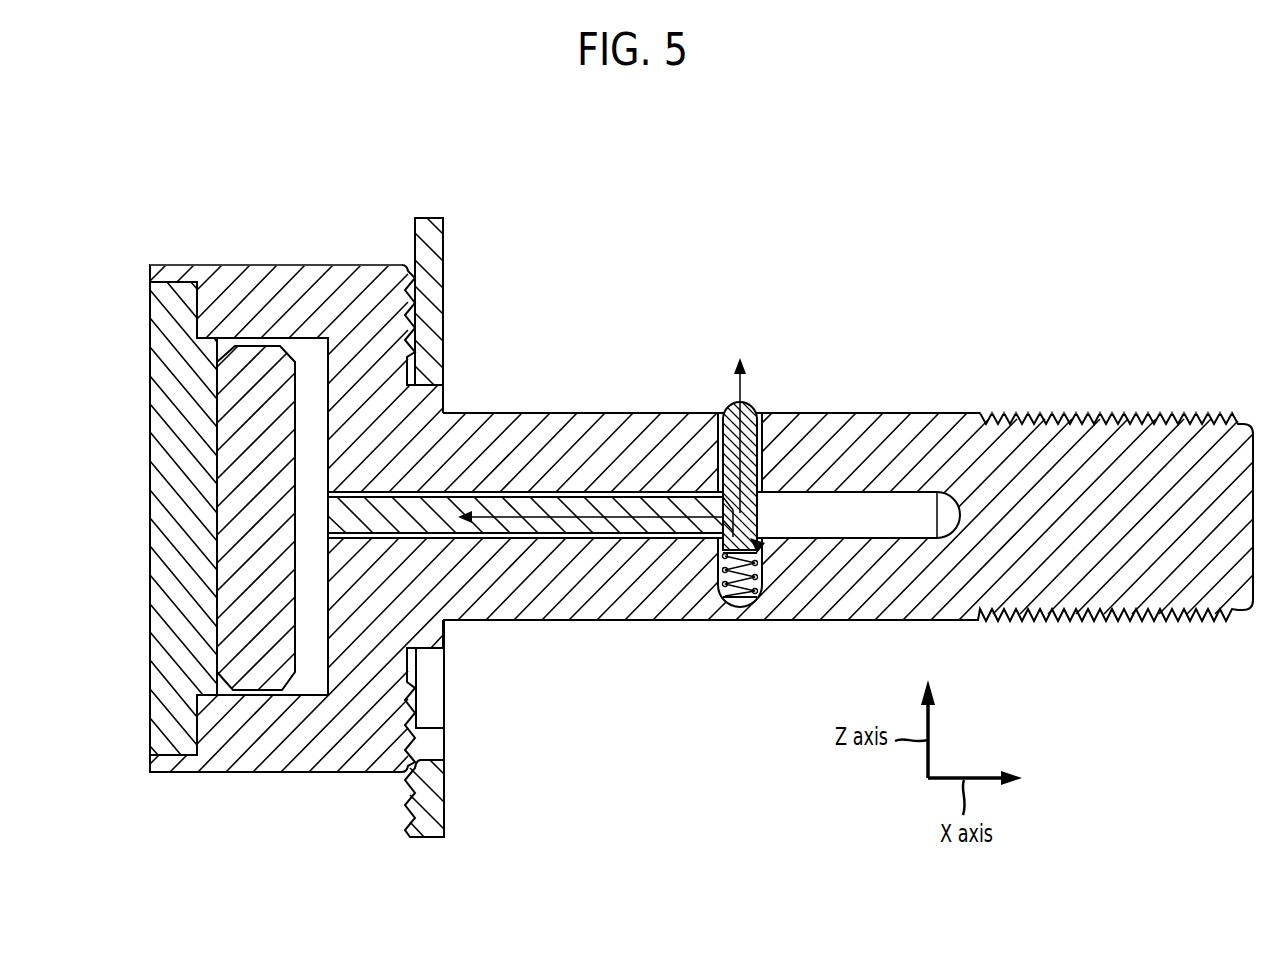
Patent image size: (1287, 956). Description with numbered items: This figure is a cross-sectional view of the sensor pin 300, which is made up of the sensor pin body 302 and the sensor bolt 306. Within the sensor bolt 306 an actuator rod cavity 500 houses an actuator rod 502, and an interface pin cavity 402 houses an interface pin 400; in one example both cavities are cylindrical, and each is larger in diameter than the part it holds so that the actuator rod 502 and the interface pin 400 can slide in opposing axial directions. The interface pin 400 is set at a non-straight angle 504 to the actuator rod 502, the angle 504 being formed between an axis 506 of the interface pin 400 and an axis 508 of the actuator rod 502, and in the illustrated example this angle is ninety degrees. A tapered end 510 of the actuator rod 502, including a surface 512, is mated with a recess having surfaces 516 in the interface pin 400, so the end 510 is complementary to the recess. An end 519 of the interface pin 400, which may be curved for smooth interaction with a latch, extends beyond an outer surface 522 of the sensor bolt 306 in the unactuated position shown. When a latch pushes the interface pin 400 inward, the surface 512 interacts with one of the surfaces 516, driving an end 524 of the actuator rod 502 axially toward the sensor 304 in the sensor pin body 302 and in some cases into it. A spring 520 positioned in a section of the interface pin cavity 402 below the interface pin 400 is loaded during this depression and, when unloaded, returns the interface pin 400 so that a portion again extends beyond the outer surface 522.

The sensor pin 300 is at (1228, 167).
The sensor pin body 302 is at (413, 213).
The sensor 304 is at (271, 539).
The sensor bolt 306 is at (1263, 217).
The interface pin 400 is at (728, 447).
The interface pin cavity 402 is at (840, 411).
The actuator rod cavity 500 is at (560, 490).
The actuator rod 502 is at (500, 503).
The non-straight angle 504 is at (693, 478).
The axis of the interface pin 506 is at (743, 438).
The axis of the actuator rod 508 is at (583, 518).
The end of the actuator rod 510 is at (761, 547).
The surface 512 is at (748, 522).
The surfaces 516 is at (727, 508).
The end of the interface pin 519 is at (758, 386).
The spring 520 is at (743, 600).
The outer surface 522 is at (762, 428).
The end of the actuator rod 524 is at (327, 507).